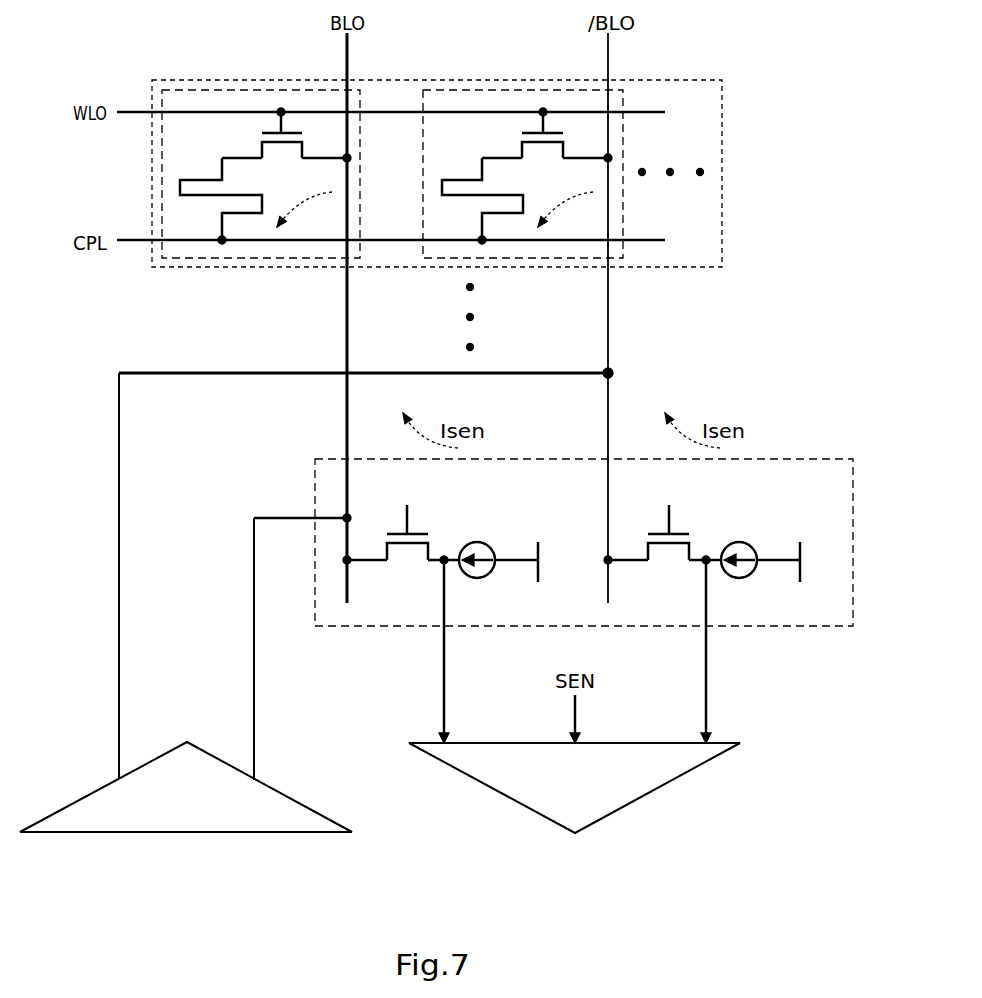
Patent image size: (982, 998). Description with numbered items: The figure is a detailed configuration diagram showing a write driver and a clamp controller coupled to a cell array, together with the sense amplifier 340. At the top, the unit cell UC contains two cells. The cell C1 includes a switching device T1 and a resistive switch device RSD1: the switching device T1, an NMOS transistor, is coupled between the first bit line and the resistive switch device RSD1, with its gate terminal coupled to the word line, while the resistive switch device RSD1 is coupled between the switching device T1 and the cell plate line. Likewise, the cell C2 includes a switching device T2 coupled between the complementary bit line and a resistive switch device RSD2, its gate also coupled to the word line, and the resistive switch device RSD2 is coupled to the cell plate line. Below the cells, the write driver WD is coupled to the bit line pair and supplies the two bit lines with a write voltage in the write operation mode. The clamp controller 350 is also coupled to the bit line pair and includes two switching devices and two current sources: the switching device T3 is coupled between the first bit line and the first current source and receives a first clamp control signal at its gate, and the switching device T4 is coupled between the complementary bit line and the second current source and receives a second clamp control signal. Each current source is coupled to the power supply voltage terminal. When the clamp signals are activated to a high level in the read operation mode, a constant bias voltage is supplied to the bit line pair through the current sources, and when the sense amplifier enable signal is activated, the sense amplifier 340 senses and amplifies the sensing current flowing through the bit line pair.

The sense amplifier 340 is at (662, 788).
The clamp controller 350 is at (584, 568).
The unit cell UC is at (152, 80).
The cell C1 is at (228, 90).
The cell C2 is at (513, 90).
The switching device T1 is at (286, 135).
The switching device T2 is at (547, 135).
The resistive switch device RSD1 is at (256, 201).
The resistive switch device RSD2 is at (517, 201).
The switching device T3 is at (440, 547).
The switching device T4 is at (702, 547).
The write driver WD is at (186, 787).